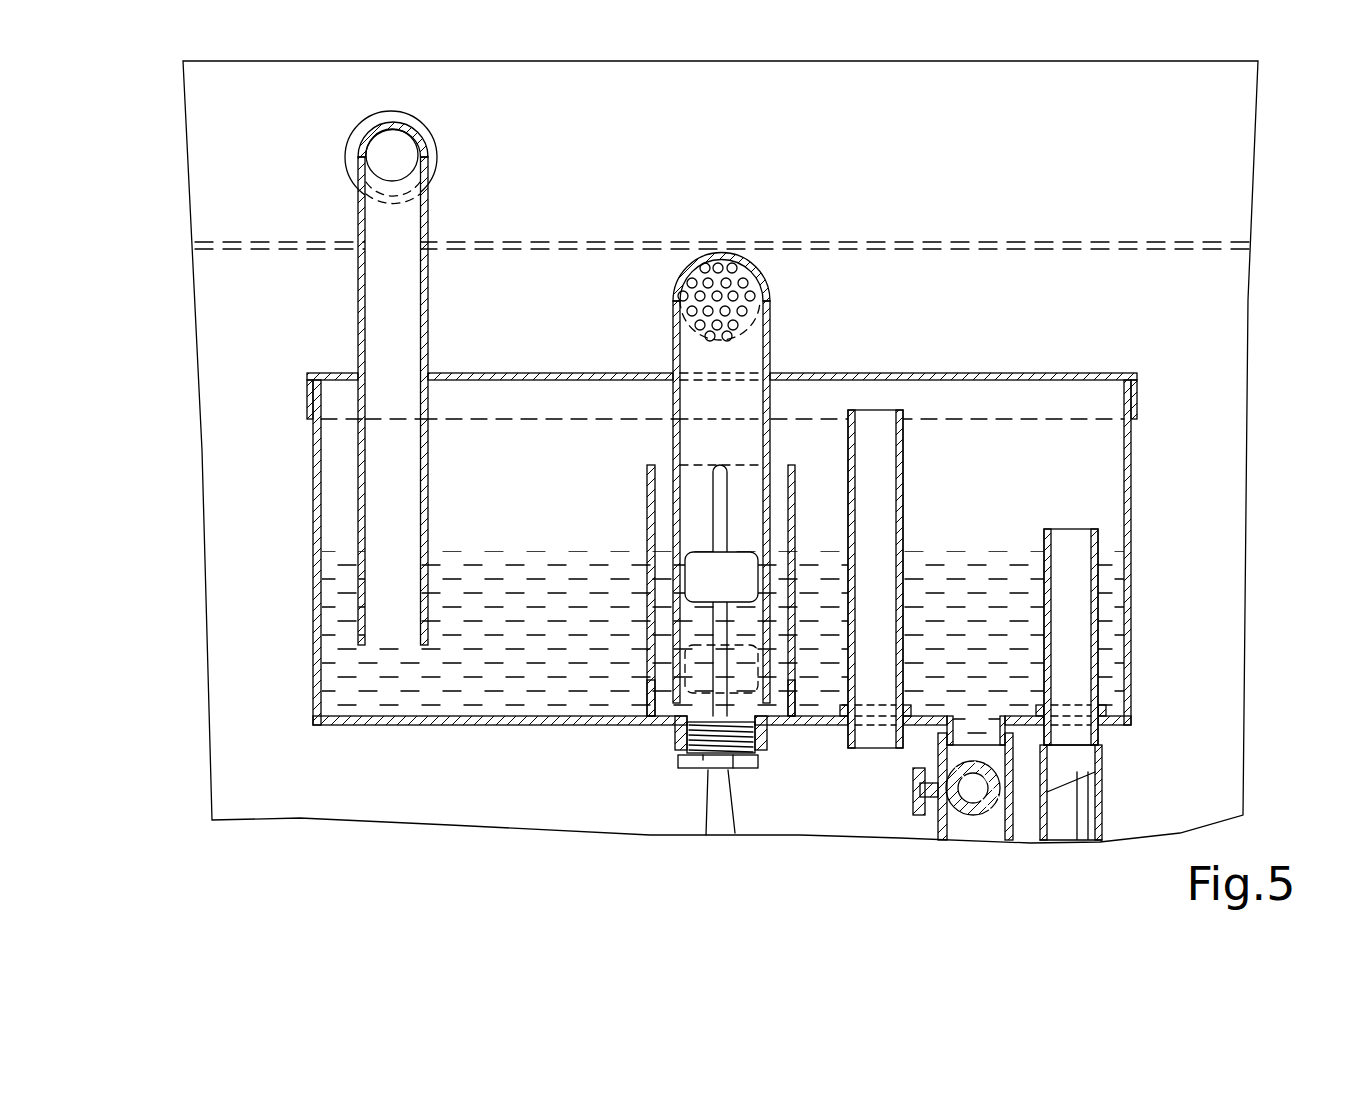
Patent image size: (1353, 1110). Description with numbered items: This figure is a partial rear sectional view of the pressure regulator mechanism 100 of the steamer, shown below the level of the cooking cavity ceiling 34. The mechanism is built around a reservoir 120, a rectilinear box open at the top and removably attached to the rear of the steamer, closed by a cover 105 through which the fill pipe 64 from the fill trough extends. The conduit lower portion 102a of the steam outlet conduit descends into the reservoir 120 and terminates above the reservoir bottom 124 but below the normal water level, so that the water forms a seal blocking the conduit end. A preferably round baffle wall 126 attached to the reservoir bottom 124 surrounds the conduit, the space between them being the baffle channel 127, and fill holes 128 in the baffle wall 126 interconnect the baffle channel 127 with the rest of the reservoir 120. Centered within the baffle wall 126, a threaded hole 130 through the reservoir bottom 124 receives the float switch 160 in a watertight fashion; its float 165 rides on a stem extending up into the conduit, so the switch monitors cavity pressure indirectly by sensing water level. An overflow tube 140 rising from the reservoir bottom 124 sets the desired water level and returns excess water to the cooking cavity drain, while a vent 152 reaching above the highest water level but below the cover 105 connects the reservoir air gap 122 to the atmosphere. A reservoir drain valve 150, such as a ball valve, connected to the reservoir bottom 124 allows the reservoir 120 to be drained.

The ceiling 34 is at (953, 245).
The fill pipe 64 is at (358, 317).
The pressure regulator mechanism 100 is at (726, 511).
The cover 105 is at (1068, 372).
The reservoir 120 is at (683, 552).
The reservoir air gap 122 is at (1078, 445).
The reservoir bottom 124 is at (467, 716).
The baffle wall 126 is at (704, 568).
The baffle channel 127 is at (667, 475).
The fill holes 128 is at (653, 683).
The conduit lower portion 102a is at (675, 658).
The float 165 is at (745, 535).
The threaded hole 130 is at (682, 727).
The float switch 160 is at (750, 770).
The vent 152 is at (862, 773).
The overflow tube 140 is at (1044, 652).
The reservoir drain valve 150 is at (960, 833).